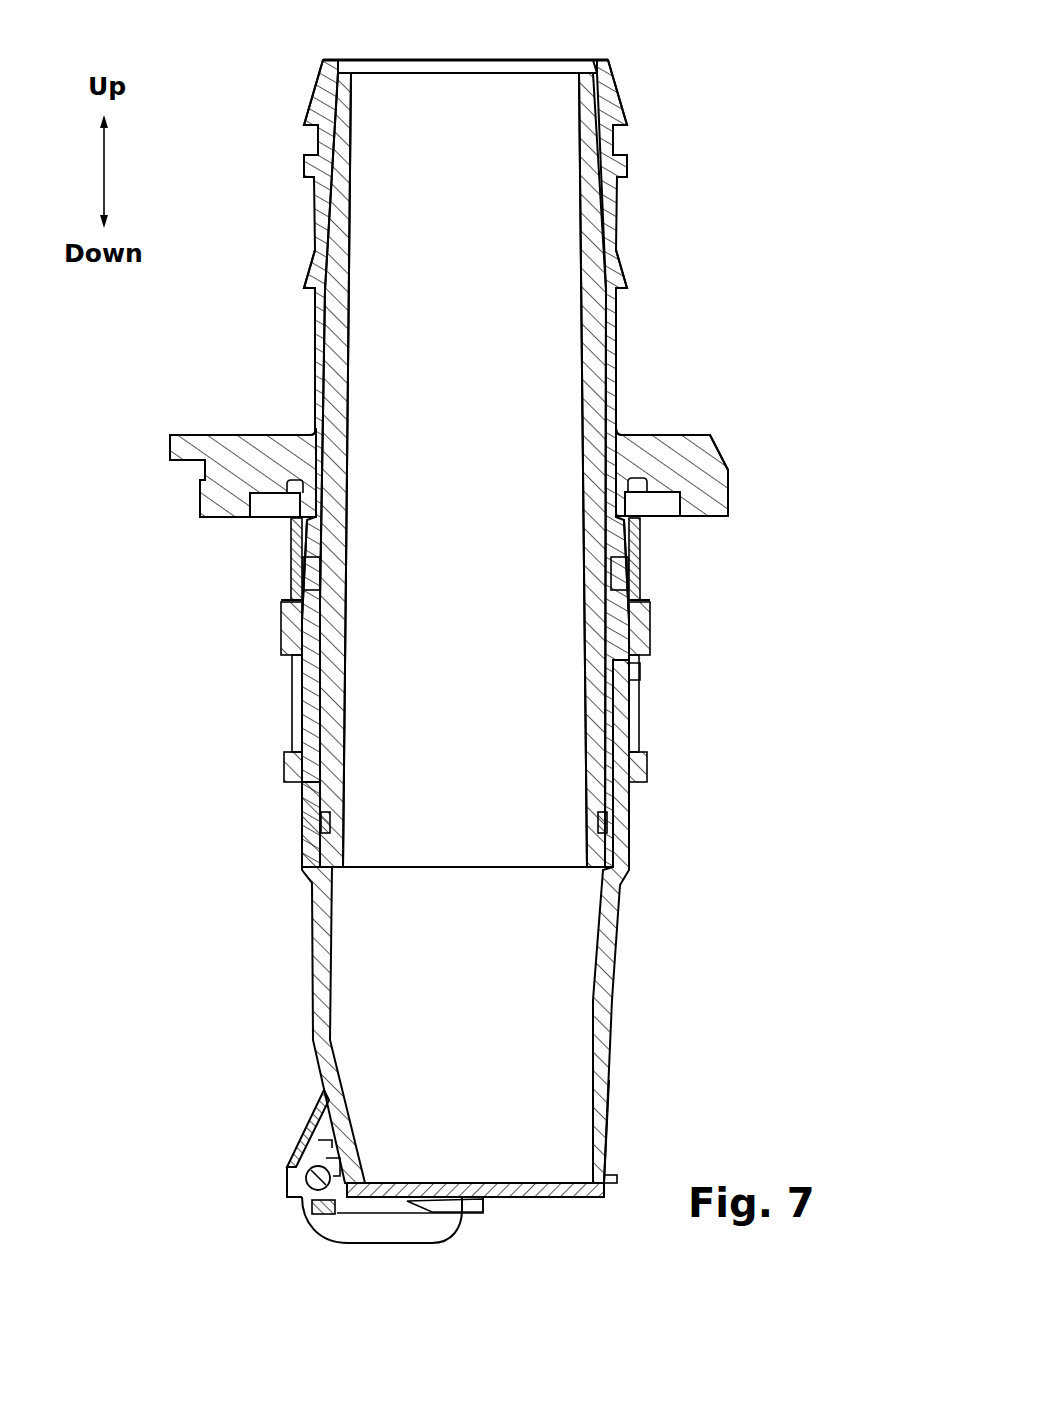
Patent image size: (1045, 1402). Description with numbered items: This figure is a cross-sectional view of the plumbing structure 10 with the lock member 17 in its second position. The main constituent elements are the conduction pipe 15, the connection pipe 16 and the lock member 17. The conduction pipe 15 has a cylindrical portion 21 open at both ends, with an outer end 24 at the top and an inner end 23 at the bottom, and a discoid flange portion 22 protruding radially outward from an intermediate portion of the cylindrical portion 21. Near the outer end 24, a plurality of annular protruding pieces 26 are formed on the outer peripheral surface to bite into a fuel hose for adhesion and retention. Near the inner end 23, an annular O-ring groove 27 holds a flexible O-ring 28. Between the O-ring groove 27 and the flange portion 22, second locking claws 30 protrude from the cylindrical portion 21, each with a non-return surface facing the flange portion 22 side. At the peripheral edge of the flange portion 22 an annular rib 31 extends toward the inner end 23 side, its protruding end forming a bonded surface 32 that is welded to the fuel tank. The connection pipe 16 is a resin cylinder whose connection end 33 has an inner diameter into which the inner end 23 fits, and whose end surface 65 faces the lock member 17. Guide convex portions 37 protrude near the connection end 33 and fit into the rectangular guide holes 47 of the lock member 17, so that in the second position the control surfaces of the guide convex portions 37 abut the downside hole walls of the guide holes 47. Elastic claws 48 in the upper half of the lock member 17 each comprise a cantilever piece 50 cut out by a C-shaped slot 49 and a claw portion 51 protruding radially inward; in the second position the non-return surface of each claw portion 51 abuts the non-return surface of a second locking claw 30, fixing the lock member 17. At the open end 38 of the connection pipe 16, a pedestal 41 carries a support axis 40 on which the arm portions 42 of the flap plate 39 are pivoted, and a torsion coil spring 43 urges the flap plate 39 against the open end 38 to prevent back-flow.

The plumbing structure 10 is at (662, 32).
The conduction pipe 15 is at (636, 137).
The connection pipe 16 is at (640, 1040).
The lock member 17 is at (660, 772).
The cylindrical portion 21 is at (306, 336).
The flange portion 22 is at (174, 424).
The inner end 23 is at (594, 854).
The outer end 24 is at (328, 60).
The annular protruding pieces 26 is at (309, 96).
The O-ring groove 27 is at (334, 826).
The O-ring 28 is at (596, 822).
The second locking claws 30 is at (326, 600).
The annular rib 31 is at (200, 504).
The bonded surface 32 is at (226, 516).
The connection end 33 is at (630, 678).
The guide convex portions 37 is at (296, 748).
The open end 38 is at (601, 1156).
The flap plate 39 is at (554, 1199).
The support axis 40 is at (303, 1178).
The pedestal 41 is at (306, 1132).
The arm portions 42 is at (397, 1244).
The torsion coil spring 43 is at (448, 1215).
The guide holes 47 is at (295, 702).
The elastic claws 48 is at (281, 572).
The slot 49 is at (291, 598).
The cantilever piece 50 is at (296, 532).
The claw portion 51 is at (318, 570).
The end surface 65 is at (290, 655).